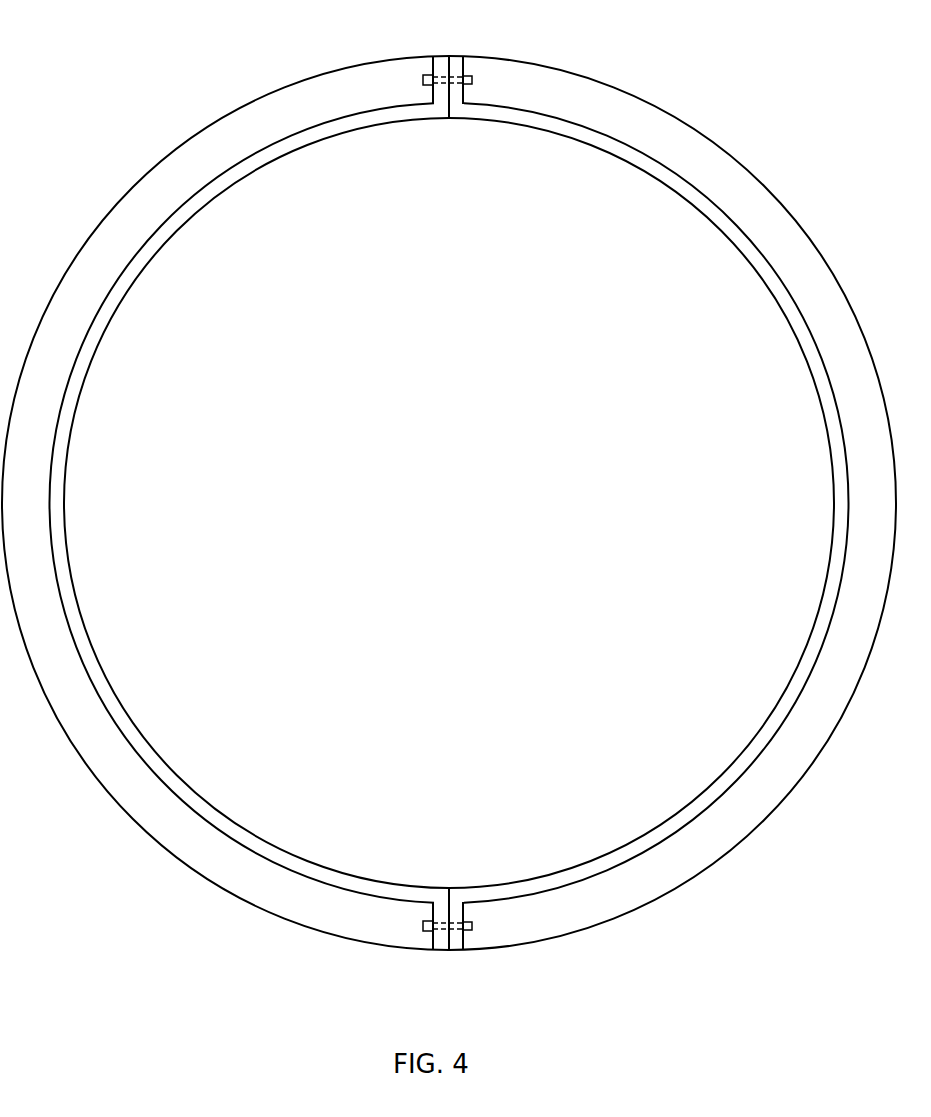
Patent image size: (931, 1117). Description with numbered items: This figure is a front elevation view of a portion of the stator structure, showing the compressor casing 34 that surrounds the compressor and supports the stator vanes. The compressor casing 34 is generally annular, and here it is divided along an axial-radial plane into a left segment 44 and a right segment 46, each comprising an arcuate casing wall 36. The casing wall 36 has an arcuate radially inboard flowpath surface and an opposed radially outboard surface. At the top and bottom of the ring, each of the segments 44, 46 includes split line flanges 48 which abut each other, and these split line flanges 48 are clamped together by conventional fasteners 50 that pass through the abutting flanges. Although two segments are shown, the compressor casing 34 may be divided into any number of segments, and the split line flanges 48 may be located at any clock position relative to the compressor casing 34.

The compressor casing 34 is at (573, 58).
The casing wall 36 is at (102, 313).
The left segment 44 is at (137, 200).
The right segment 46 is at (730, 177).
The split line flanges 48 is at (442, 62).
The fasteners 50 is at (422, 80).